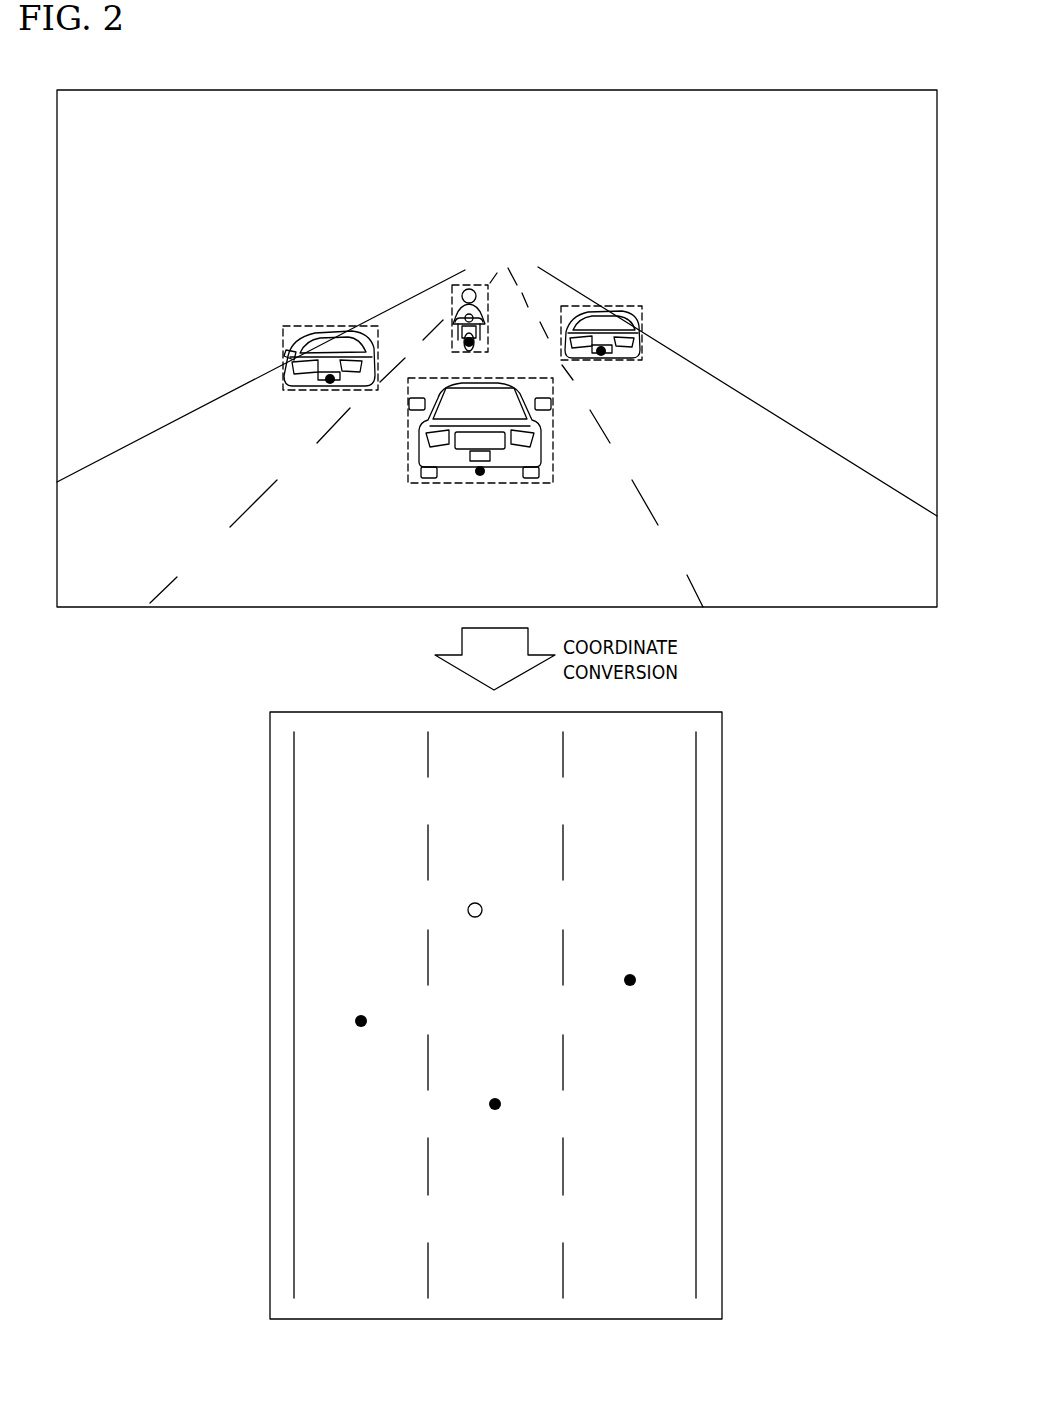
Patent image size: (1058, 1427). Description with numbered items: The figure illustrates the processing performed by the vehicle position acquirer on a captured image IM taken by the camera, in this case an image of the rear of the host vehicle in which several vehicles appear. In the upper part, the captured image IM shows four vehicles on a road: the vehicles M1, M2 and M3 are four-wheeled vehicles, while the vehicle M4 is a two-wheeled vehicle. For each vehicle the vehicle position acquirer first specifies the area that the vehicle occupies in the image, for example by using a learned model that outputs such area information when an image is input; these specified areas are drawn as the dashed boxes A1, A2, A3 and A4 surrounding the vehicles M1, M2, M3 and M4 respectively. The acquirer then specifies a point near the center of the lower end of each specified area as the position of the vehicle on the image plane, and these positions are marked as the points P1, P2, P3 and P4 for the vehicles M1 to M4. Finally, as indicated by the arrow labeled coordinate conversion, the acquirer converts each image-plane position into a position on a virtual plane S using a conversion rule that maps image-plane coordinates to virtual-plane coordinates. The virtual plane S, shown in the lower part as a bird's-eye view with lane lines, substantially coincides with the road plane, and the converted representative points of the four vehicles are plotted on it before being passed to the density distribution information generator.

The captured image IM is at (493, 90).
The vehicle M1 is at (408, 456).
The vehicle M2 is at (298, 327).
The vehicle M3 is at (619, 319).
The vehicle M4 is at (452, 302).
The area occupied by vehicle A1 is at (520, 484).
The area occupied by vehicle A2 is at (283, 345).
The area occupied by vehicle A3 is at (642, 325).
The area occupied by vehicle A4 is at (488, 302).
The position of vehicle P1 is at (480, 476).
The position of vehicle P2 is at (328, 384).
The position of vehicle P3 is at (603, 355).
The position of vehicle P4 is at (465, 338).
The virtual plane S is at (722, 740).